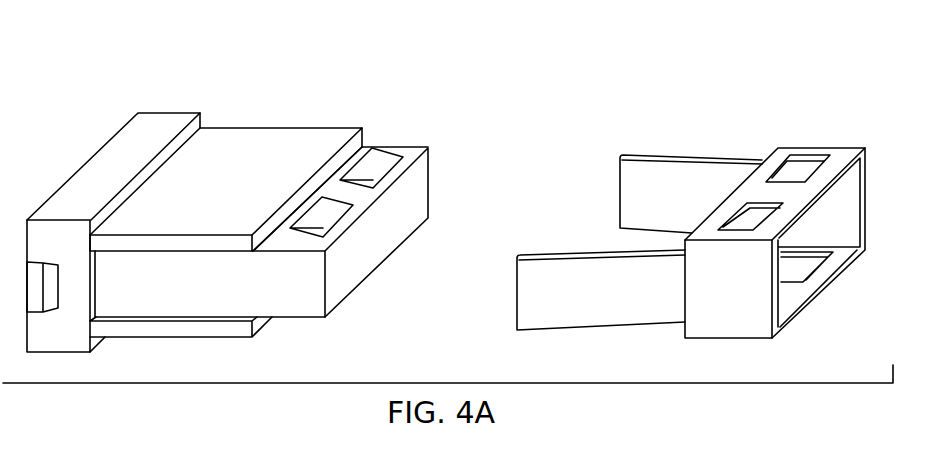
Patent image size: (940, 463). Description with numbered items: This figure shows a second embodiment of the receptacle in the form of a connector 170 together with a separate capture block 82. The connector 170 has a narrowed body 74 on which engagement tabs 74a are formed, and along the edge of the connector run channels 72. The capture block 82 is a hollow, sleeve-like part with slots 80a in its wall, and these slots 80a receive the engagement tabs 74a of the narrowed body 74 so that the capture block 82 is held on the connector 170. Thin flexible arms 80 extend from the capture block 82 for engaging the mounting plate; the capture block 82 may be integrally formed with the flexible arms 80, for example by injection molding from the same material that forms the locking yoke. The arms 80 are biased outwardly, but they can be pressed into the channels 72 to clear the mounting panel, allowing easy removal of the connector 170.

The connector 170 is at (109, 121).
The channels 72 is at (168, 297).
The narrowed body 74 is at (429, 142).
The engagement tabs 74a is at (377, 165).
The flexible arms 80 is at (614, 302).
The slots 80a is at (803, 168).
The capture block 82 is at (843, 157).